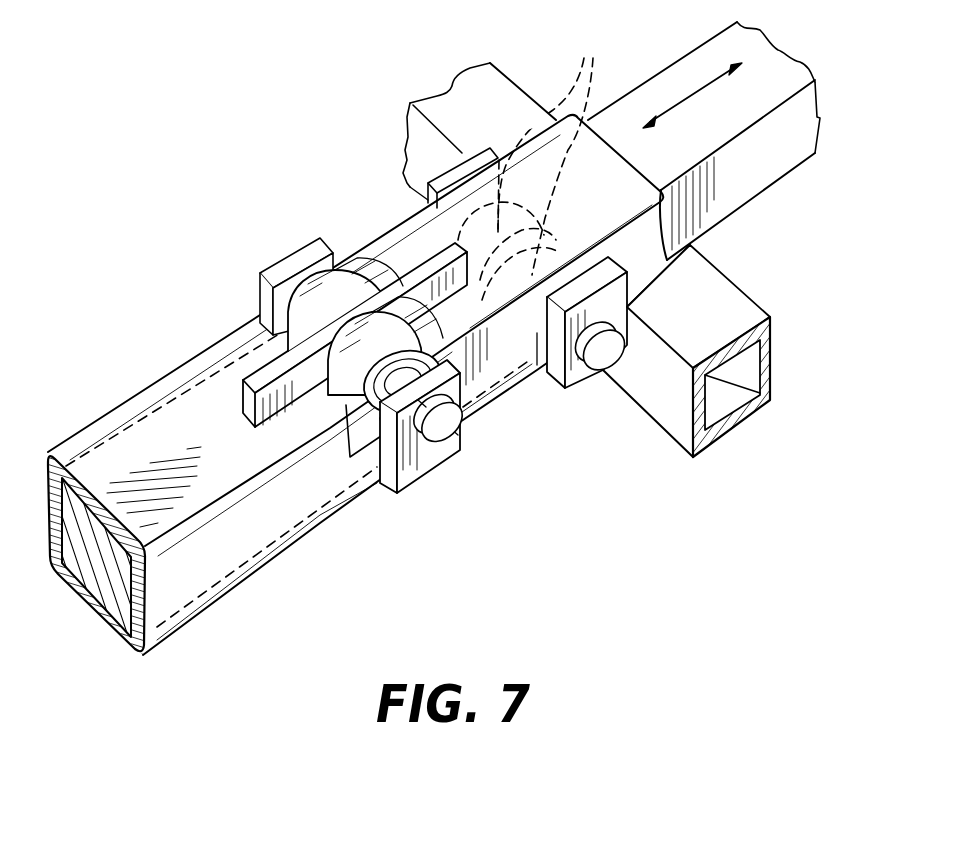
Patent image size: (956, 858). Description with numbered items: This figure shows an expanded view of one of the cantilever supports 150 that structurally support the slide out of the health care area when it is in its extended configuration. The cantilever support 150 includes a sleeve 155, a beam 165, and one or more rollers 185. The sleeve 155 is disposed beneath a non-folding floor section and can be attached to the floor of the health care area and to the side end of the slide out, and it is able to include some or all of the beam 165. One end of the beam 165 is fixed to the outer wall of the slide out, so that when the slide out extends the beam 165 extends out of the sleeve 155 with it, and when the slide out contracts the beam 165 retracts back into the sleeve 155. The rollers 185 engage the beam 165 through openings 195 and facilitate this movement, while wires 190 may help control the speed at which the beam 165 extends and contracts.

The cantilever support 150 is at (382, 228).
The sleeve 155 is at (164, 420).
The beam 165 is at (750, 172).
The roller 185 is at (372, 330).
The wire 190 is at (534, 166).
The opening 195 is at (387, 494).